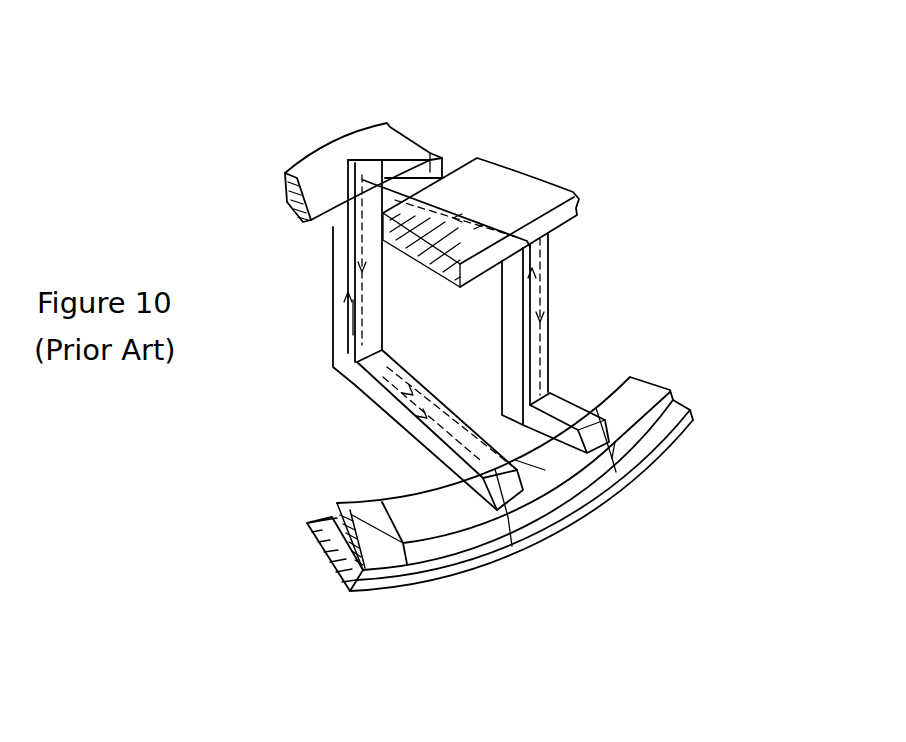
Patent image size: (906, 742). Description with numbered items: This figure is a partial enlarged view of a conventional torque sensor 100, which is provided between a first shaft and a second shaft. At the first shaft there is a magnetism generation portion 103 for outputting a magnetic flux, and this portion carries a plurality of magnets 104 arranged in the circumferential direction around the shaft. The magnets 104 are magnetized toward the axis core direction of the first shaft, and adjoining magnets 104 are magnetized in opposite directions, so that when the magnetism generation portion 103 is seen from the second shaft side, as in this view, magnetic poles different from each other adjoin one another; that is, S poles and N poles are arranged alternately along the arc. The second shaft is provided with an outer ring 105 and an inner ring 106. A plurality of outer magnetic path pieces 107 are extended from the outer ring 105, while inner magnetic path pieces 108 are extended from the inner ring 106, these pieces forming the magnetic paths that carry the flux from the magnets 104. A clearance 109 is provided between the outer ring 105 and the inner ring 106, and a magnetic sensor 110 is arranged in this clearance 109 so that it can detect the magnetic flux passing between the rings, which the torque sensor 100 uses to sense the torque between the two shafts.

The torque sensor 100 is at (641, 152).
The magnetism generation portion 103 is at (672, 471).
The magnets 104 is at (645, 387).
The outer ring 105 is at (540, 188).
The inner ring 106 is at (307, 177).
The outer magnetic path pieces 107 is at (550, 292).
The inner magnetic path pieces 108 is at (343, 356).
The clearance 109 is at (453, 158).
The magnetic sensor 110 is at (430, 155).